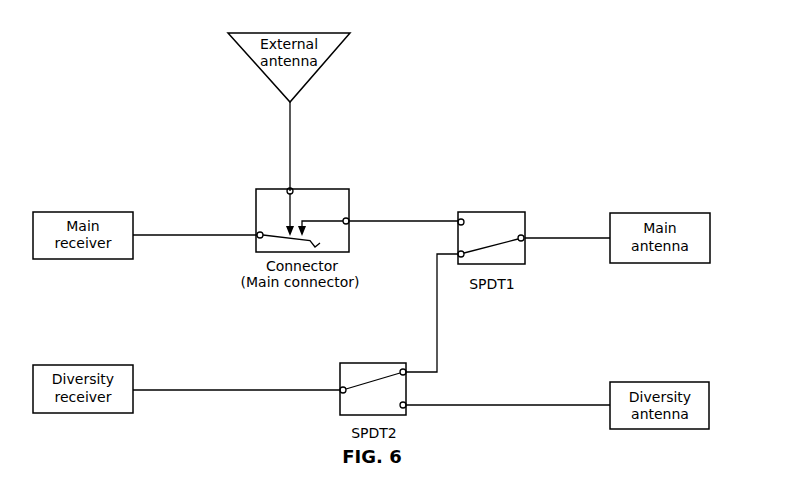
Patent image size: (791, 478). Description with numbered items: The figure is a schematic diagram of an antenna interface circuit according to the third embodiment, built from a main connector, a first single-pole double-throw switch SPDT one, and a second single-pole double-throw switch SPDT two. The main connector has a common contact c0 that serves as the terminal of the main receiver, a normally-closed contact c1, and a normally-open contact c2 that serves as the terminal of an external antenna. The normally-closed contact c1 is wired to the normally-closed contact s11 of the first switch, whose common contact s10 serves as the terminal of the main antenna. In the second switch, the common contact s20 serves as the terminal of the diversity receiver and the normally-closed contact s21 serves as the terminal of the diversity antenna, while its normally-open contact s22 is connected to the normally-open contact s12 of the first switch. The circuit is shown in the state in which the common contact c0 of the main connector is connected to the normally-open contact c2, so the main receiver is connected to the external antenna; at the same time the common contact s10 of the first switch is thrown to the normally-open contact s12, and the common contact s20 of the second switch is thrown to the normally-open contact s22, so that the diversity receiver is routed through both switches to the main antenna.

The common contact of the main connector c0 is at (248, 227).
The normally-closed contact of the main connector c1 is at (356, 213).
The normally-open contact of the main connector c2 is at (298, 182).
The common contact of the first single-pole double-throw switch s10 is at (535, 230).
The normally-closed contact of the first single-pole double-throw switch s11 is at (447, 215).
The normally-open contact of the first single-pole double-throw switch s12 is at (447, 247).
The common contact of the second single-pole double-throw switch s20 is at (328, 378).
The normally-closed contact of the second single-pole double-throw switch s21 is at (418, 398).
The normally-open contact of the second single-pole double-throw switch s22 is at (417, 365).